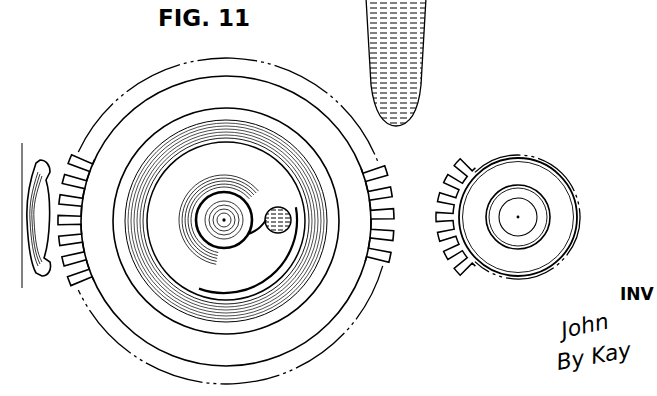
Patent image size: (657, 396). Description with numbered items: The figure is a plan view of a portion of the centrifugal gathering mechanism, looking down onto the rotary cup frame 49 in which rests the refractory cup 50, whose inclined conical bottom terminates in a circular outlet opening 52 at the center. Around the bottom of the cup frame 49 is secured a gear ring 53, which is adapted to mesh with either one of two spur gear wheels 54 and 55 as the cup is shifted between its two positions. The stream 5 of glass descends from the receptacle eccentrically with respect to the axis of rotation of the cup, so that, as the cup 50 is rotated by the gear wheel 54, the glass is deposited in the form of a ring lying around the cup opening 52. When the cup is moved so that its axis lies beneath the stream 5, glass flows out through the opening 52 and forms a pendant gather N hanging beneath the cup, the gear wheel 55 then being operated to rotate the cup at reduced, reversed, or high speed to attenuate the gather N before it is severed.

The pendant gather N is at (418, 13).
The rotary cup frame 49 is at (220, 83).
The cup 50 is at (272, 130).
The outlet opening 52 is at (205, 250).
The stream of glass 5 is at (278, 209).
The gear ring 53 is at (76, 284).
The spur gear wheel 54 is at (42, 168).
The spur gear wheel 55 is at (457, 175).